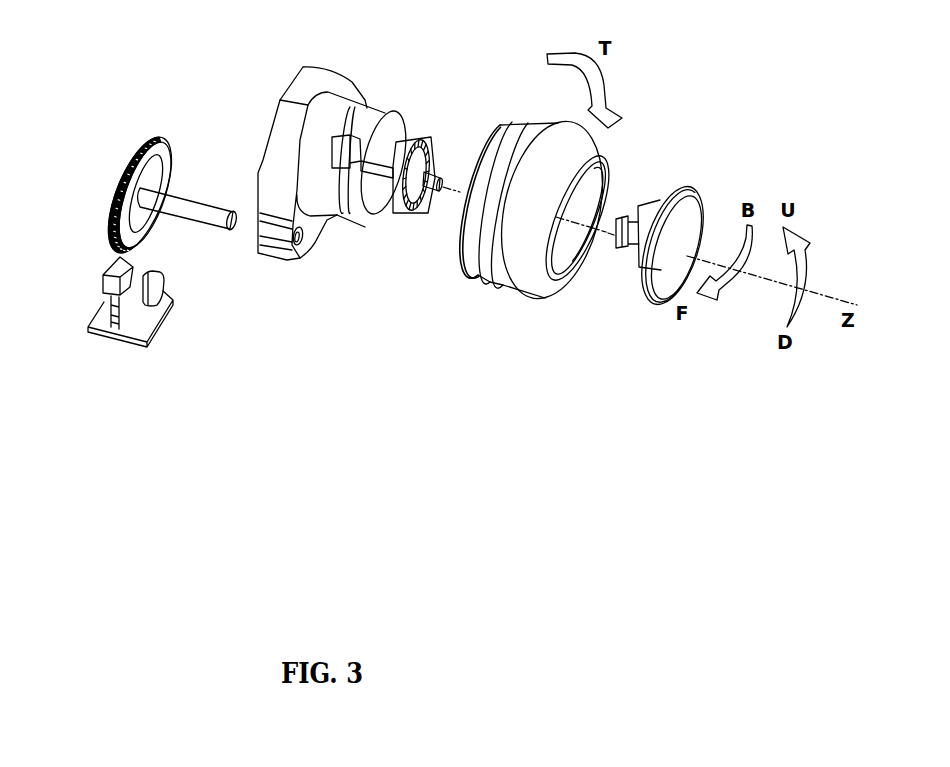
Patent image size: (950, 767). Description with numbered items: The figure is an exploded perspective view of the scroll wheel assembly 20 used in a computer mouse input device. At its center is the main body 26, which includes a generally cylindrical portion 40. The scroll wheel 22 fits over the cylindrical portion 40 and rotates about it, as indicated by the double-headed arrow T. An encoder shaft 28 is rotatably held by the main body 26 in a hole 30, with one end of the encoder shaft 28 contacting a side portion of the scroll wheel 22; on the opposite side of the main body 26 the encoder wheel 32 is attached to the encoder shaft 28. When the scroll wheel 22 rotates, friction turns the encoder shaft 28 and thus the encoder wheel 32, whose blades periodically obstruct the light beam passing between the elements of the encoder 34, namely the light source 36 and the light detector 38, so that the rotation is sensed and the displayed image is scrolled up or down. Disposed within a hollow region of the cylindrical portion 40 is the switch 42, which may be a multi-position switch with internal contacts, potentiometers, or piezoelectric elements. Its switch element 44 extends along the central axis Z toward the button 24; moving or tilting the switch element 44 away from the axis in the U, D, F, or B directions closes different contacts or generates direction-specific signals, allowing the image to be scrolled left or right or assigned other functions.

The scroll wheel assembly 20 is at (238, 483).
The scroll wheel 22 is at (506, 251).
The button 24 is at (666, 261).
The main body 26 is at (290, 123).
The encoder shaft 28 is at (192, 210).
The hole 30 is at (302, 243).
The encoder wheel 32 is at (143, 122).
The encoder 34 is at (88, 274).
The light source 36 is at (162, 295).
The light detector 38 is at (112, 285).
The cylindrical portion 40 is at (351, 113).
The switch 42 is at (418, 128).
The switch element 44 is at (430, 170).